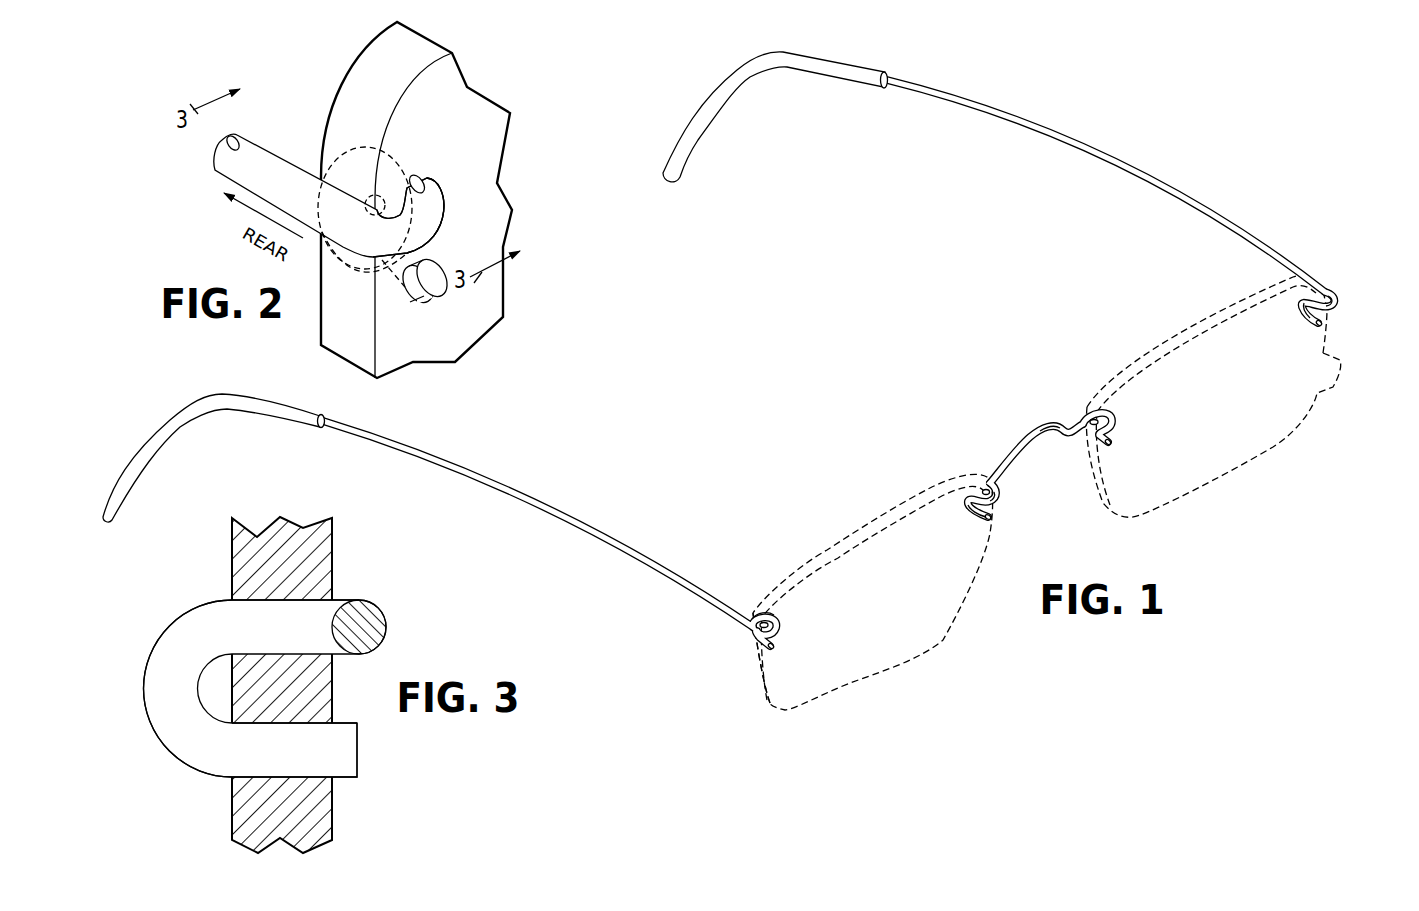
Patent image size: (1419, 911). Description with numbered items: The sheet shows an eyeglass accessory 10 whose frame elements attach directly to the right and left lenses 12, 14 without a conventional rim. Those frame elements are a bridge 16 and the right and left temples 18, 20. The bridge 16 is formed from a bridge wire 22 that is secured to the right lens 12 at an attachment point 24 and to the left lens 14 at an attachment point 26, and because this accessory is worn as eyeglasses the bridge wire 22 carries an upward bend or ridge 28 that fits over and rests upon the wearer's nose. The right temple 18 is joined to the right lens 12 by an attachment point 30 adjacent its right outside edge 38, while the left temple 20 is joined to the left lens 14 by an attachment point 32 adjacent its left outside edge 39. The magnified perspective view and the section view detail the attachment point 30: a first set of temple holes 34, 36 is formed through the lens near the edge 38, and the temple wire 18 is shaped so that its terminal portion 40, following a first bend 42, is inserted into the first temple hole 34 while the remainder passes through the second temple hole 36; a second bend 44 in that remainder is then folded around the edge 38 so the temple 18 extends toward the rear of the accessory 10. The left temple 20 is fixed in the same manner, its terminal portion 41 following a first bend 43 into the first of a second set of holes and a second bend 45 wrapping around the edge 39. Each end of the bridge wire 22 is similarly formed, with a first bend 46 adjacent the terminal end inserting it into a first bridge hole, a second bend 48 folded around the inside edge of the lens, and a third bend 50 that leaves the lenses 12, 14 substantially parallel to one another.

In FIG. 1, the eyeglass accessory 10 is at (1237, 129).
In FIG. 1, the right lens 12 is at (864, 615).
In FIG. 2, the right lens 12 is at (460, 203).
In FIG. 1, the left lens 14 is at (1197, 406).
In FIG. 1, the bridge 16 is at (1065, 460).
In FIG. 1, the right temple 18 is at (469, 543).
In FIG. 2, the right temple 18 is at (292, 160).
In FIG. 3, the right temple 18 is at (176, 611).
In FIG. 1, the left temple 20 is at (1027, 211).
In FIG. 1, the bridge wire 22 is at (1022, 455).
In FIG. 1, the attachment point 24 is at (1007, 510).
In FIG. 1, the attachment point 26 is at (1122, 438).
In FIG. 1, the upward bend or ridge 28 is at (1048, 420).
In FIG. 1, the attachment point 30 is at (738, 644).
In FIG. 2, the attachment point 30 is at (452, 176).
In FIG. 1, the attachment point 32 is at (1335, 276).
In FIG. 2, the first temple hole 34 is at (408, 279).
In FIG. 3, the first temple hole 34 is at (297, 727).
In FIG. 2, the second temple hole 36 is at (417, 178).
In FIG. 3, the second temple hole 36 is at (297, 605).
In FIG. 1, the right outside edge 38 is at (755, 685).
In FIG. 2, the right outside edge 38 is at (345, 328).
In FIG. 3, the right outside edge 38 is at (282, 685).
In FIG. 1, the left outside edge 39 is at (1331, 385).
In FIG. 1, the terminal portion 40 is at (774, 648).
In FIG. 2, the terminal portion 40 is at (434, 288).
In FIG. 3, the terminal portion 40 is at (357, 748).
In FIG. 1, the terminal portion 41 is at (1324, 324).
In FIG. 1, the first bend 42 is at (750, 607).
In FIG. 2, the first bend 42 is at (337, 150).
In FIG. 3, the first bend 42 is at (142, 677).
In FIG. 1, the first bend 43 is at (1303, 305).
In FIG. 1, the second bend 44 is at (775, 627).
In FIG. 2, the second bend 44 is at (445, 233).
In FIG. 3, the second bend 44 is at (387, 627).
In FIG. 1, the second bend 45 is at (1337, 297).
In FIG. 1, the first bend 46 is at (968, 502).
In FIG. 1, the second bend 48 is at (1002, 490).
In FIG. 1, the third bend 50 is at (987, 477).